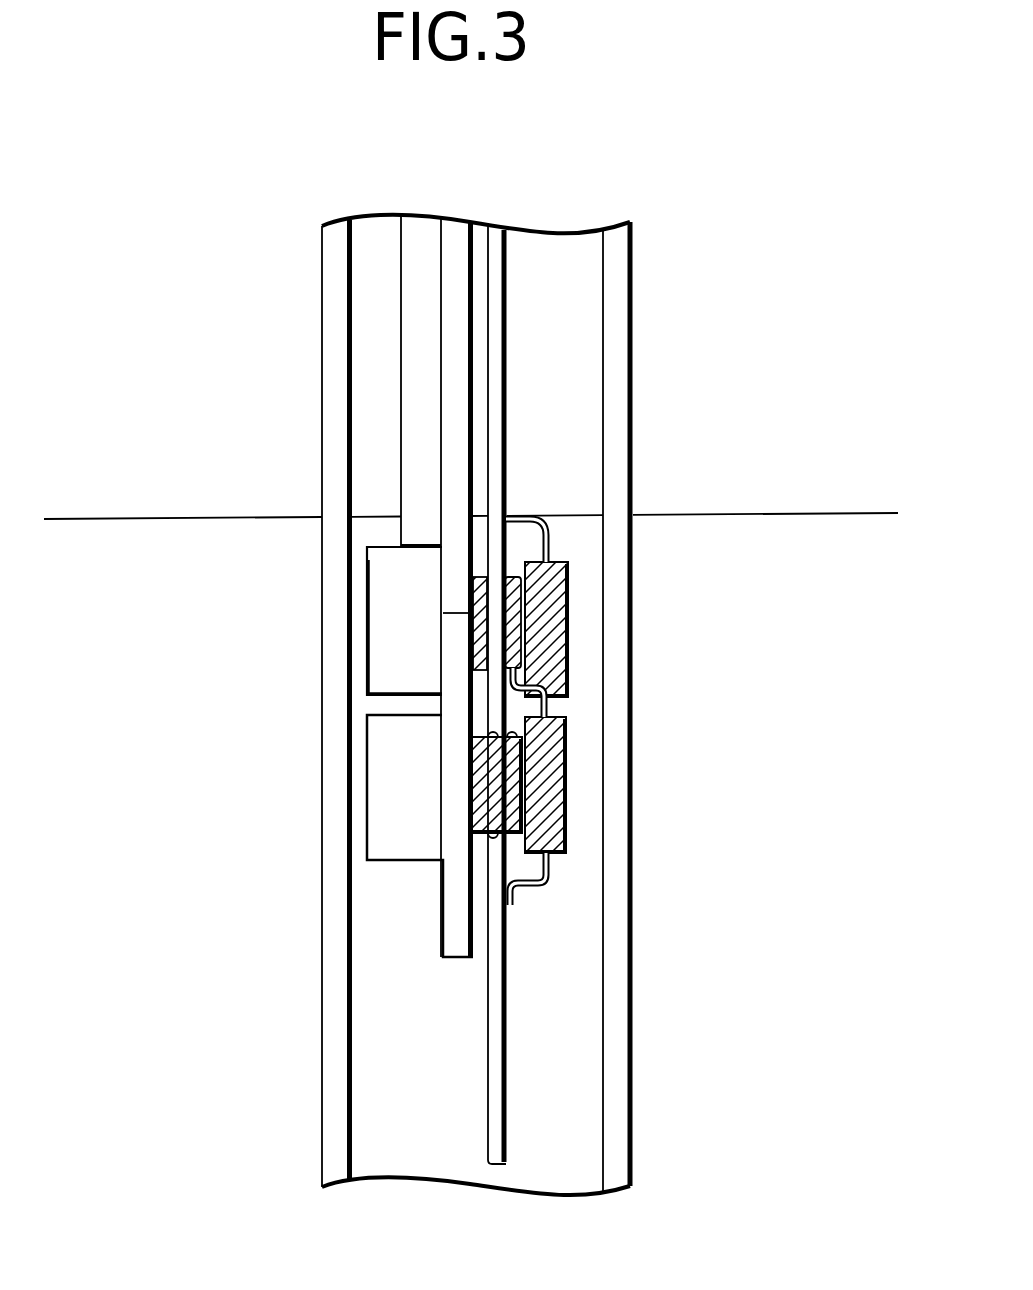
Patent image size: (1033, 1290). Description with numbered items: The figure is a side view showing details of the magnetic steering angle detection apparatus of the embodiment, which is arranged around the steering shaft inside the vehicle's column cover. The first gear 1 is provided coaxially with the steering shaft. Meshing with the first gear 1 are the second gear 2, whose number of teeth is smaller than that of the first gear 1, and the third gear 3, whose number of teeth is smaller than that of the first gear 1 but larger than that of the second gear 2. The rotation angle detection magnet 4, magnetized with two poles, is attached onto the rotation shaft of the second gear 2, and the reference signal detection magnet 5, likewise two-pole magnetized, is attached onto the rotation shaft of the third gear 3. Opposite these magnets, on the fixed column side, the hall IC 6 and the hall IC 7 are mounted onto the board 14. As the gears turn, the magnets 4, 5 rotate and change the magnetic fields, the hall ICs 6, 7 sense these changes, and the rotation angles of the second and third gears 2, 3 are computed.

The first gear 1 is at (410, 436).
The second gear 2 is at (383, 627).
The third gear 3 is at (387, 807).
The rotation angle detection magnet 4 is at (515, 578).
The reference signal detection magnet 5 is at (508, 795).
The hall IC 6 is at (556, 603).
The hall IC 7 is at (563, 767).
The board 14 is at (506, 1020).